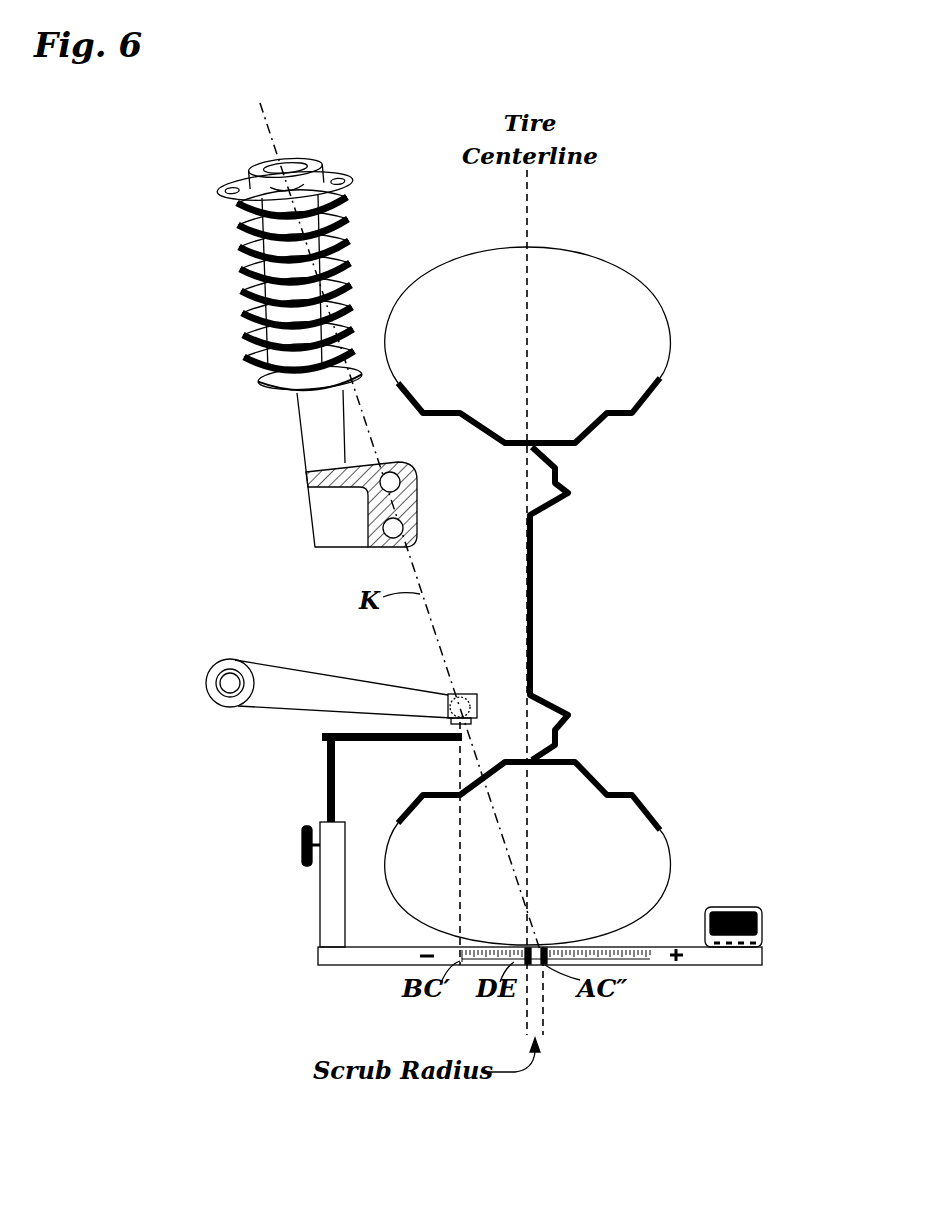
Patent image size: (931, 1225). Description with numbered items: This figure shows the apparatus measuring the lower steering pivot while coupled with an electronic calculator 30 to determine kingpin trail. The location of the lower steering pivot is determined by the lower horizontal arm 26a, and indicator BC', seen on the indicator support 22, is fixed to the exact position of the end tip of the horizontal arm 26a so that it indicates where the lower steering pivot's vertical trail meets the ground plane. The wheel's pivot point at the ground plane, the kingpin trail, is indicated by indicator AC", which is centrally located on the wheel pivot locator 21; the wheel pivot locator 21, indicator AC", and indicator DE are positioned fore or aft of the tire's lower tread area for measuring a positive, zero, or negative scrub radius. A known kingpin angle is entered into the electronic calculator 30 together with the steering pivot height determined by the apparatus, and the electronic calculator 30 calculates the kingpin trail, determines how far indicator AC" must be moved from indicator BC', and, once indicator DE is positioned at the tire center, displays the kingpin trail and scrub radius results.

The wheel pivot locator 21 is at (712, 962).
The indicator support 22 is at (348, 960).
The lower horizontal arm 26a is at (415, 744).
The electronic calculator 30 is at (762, 915).